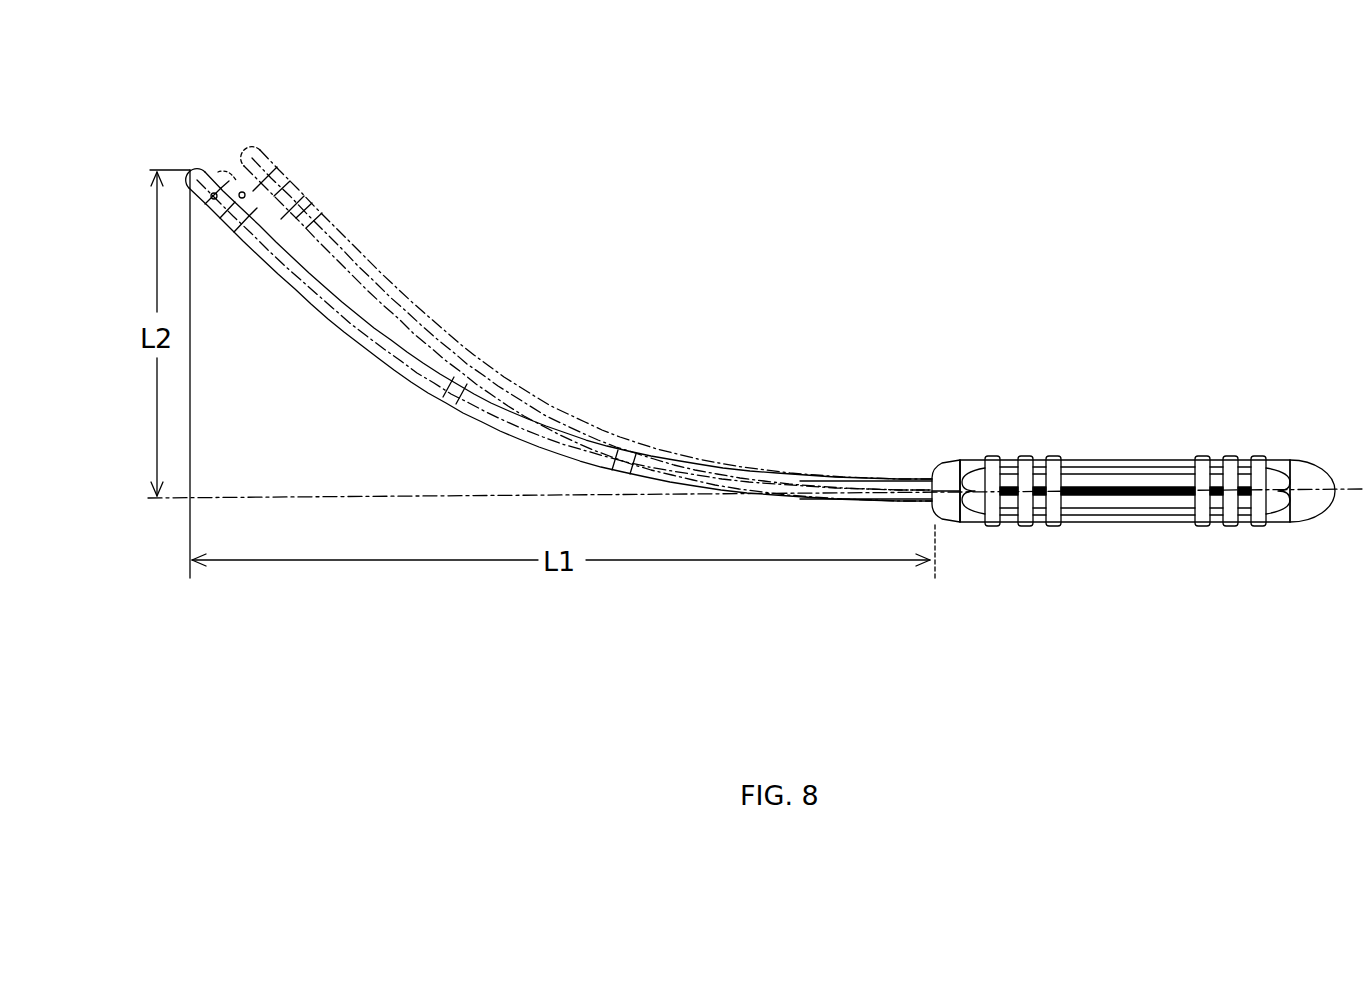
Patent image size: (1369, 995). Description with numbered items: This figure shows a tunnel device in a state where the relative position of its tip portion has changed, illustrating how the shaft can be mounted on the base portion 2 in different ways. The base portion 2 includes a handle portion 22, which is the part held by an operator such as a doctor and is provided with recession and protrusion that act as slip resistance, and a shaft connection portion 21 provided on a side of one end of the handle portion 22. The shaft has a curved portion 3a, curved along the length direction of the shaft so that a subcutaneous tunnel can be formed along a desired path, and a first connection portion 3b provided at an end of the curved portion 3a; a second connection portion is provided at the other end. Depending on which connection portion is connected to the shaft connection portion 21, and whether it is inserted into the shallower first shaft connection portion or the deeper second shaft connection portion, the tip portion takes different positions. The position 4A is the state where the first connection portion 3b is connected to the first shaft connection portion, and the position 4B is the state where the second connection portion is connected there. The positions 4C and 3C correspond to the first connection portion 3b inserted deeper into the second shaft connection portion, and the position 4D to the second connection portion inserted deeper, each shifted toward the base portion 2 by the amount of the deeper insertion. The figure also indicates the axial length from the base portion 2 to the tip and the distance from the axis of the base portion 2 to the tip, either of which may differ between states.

The base portion 2 is at (1133, 503).
The shaft connection portion 21 is at (955, 528).
The handle portion 22 is at (1130, 500).
The curved portion 3a is at (458, 392).
The first connection portion 3b is at (880, 478).
The position of tip portion (first connection portion in second shaft connection por 3C is at (292, 240).
The position of tip portion (first connection portion in first shaft connection port 4A is at (183, 167).
The position of tip portion (second connection portion in first shaft connection por 4B is at (210, 155).
The position of tip portion (first connection portion in second shaft connection por 4C is at (255, 160).
The position of tip portion (second connection portion in second shaft connection po 4D is at (228, 150).